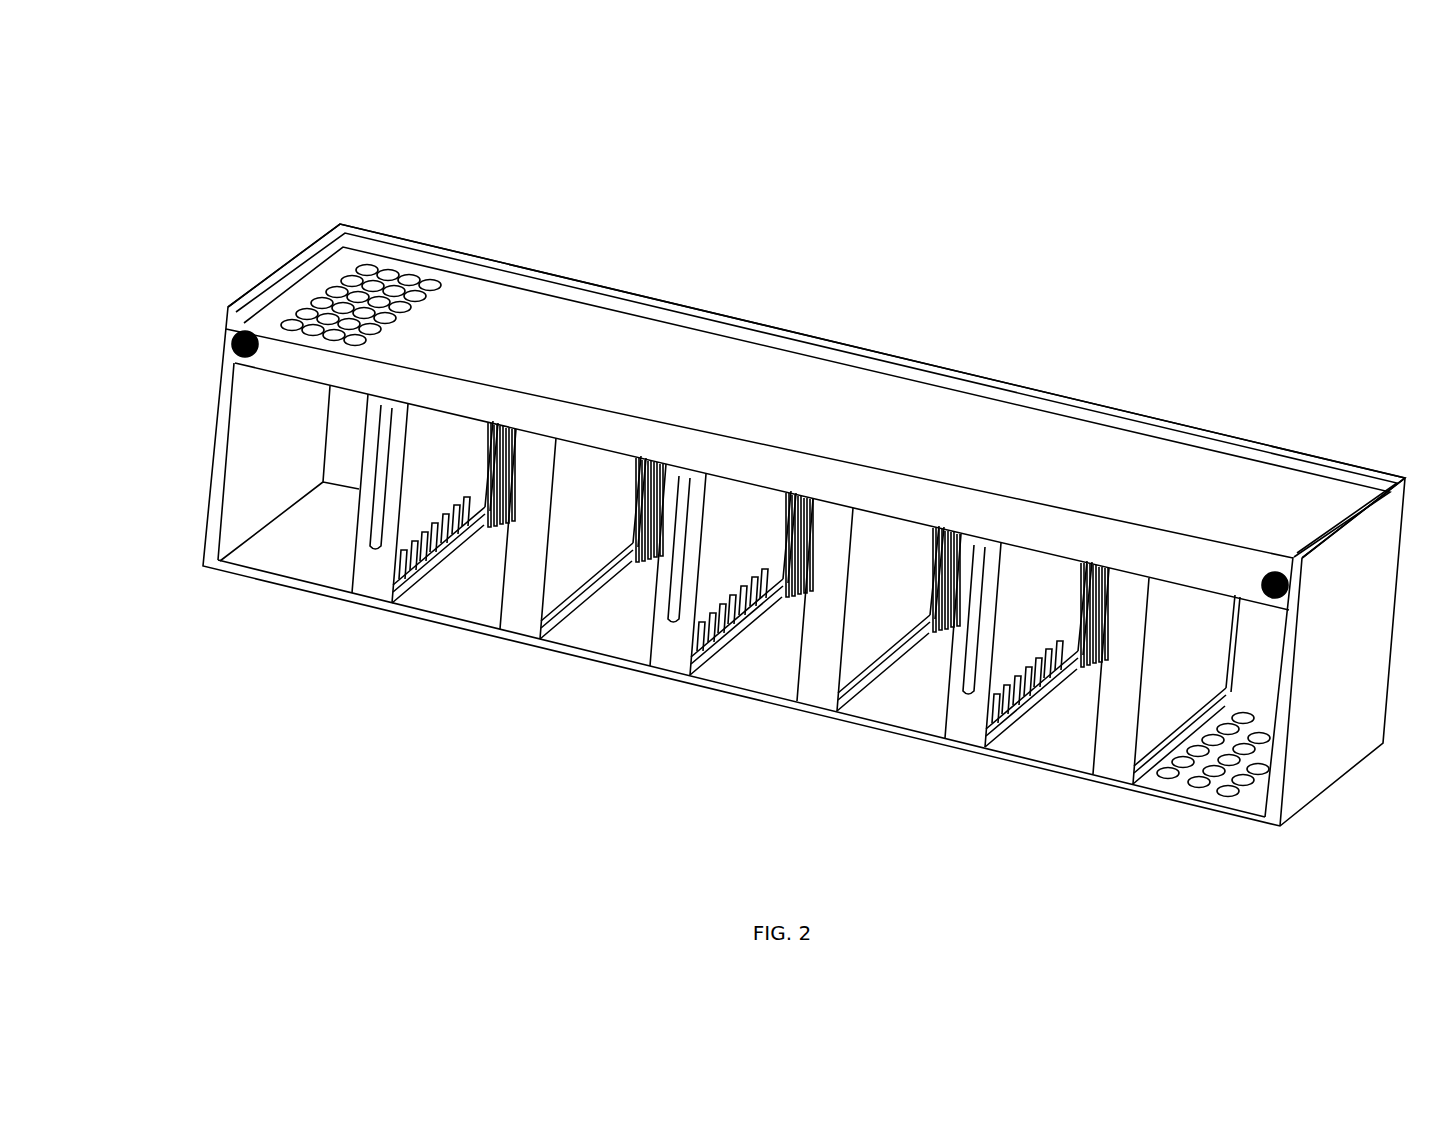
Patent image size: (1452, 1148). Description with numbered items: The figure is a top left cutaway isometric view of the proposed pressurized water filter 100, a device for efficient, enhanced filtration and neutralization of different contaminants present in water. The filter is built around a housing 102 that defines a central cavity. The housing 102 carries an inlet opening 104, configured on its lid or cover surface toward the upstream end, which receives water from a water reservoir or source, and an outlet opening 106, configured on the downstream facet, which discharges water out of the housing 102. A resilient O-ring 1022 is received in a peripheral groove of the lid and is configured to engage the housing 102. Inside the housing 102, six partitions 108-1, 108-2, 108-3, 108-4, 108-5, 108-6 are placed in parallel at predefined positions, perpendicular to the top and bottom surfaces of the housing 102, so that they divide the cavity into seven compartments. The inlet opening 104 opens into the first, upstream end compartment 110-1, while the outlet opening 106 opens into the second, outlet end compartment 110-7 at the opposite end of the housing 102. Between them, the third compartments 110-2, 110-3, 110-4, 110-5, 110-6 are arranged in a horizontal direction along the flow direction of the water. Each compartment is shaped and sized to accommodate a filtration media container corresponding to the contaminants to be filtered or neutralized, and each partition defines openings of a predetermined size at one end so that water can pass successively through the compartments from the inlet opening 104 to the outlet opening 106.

The pressurized water filter 100 is at (286, 108).
The housing 102 is at (361, 359).
The inlet opening 104 is at (386, 283).
The outlet opening 106 is at (1226, 774).
The resilient O-ring 1022 is at (242, 330).
The partition 108-1 is at (430, 446).
The partition 108-2 is at (571, 499).
The partition 108-3 is at (727, 523).
The partition 108-4 is at (870, 572).
The partition 108-5 is at (1026, 600).
The partition 108-6 is at (1164, 651).
The first compartment 110-1 is at (336, 534).
The third compartment 110-2 is at (479, 573).
The third compartment 110-3 is at (646, 601).
The third compartment 110-4 is at (781, 635).
The third compartment 110-5 is at (922, 675).
The third compartment 110-6 is at (1076, 697).
The second compartment 110-7 is at (1258, 678).